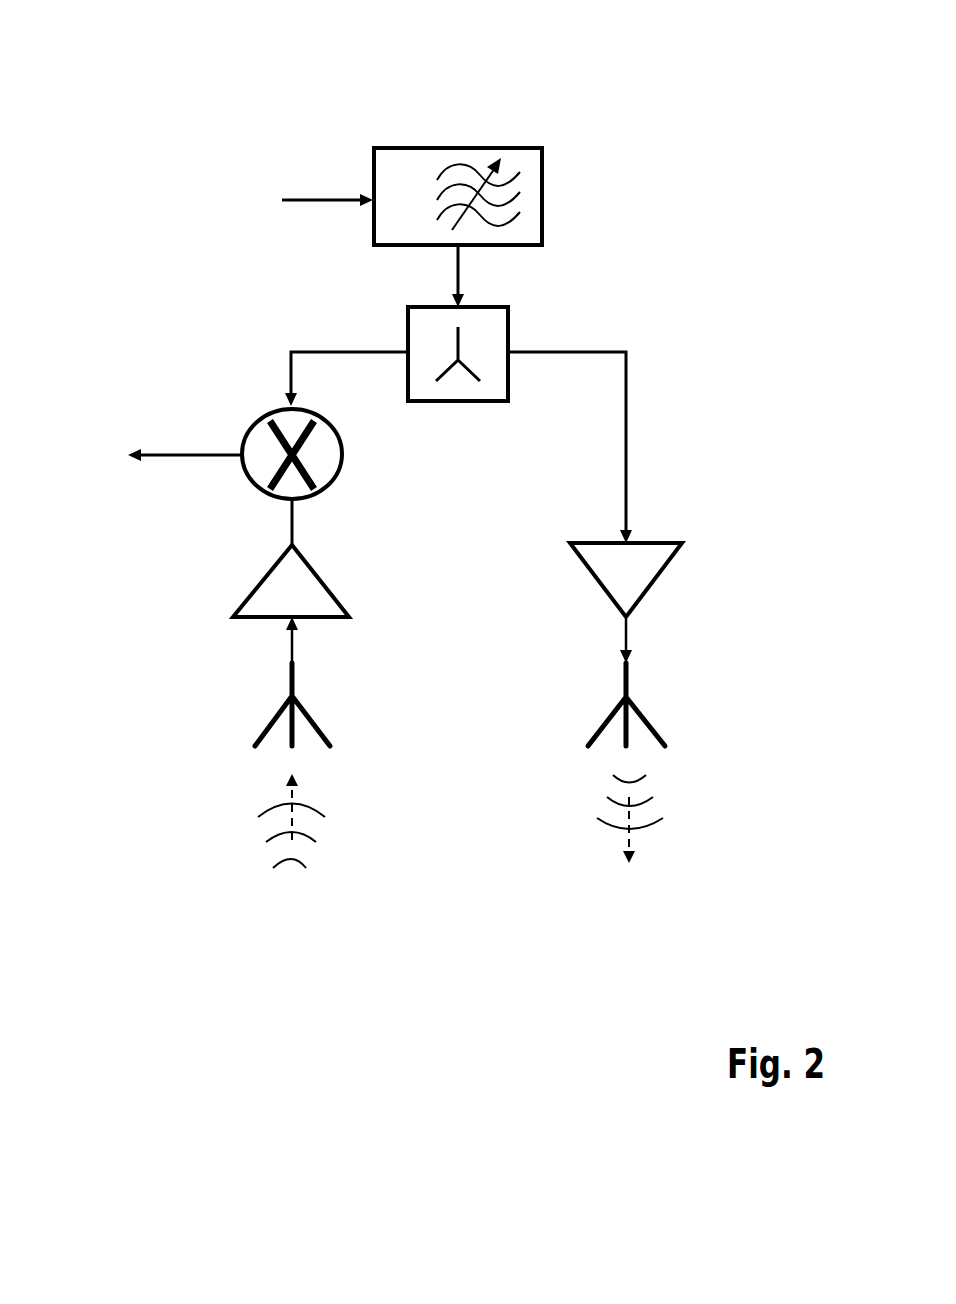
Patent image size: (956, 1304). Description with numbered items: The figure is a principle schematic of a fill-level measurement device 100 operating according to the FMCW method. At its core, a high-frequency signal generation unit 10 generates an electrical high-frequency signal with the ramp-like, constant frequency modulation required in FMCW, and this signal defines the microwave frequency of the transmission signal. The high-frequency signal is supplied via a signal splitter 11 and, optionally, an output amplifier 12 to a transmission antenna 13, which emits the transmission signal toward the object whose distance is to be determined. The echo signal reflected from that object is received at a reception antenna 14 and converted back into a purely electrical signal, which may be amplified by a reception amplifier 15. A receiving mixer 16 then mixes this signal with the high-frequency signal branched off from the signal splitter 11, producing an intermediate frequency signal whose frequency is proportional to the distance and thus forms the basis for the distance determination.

The fill-level measurement device 100 is at (228, 96).
The high-frequency signal generation unit 10 is at (543, 218).
The signal splitter 11 is at (460, 402).
The output amplifier 12 is at (647, 592).
The transmission antenna 13 is at (629, 682).
The reception antenna 14 is at (286, 700).
The reception amplifier 15 is at (250, 594).
The receiving mixer 16 is at (262, 410).